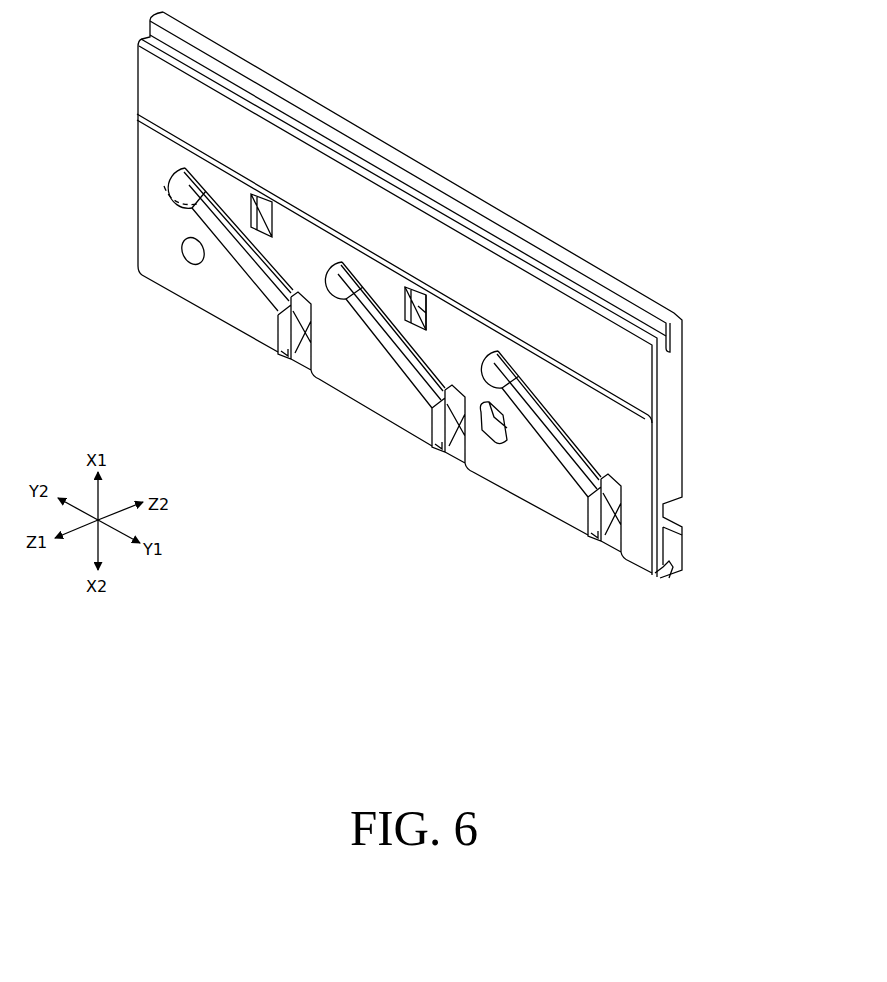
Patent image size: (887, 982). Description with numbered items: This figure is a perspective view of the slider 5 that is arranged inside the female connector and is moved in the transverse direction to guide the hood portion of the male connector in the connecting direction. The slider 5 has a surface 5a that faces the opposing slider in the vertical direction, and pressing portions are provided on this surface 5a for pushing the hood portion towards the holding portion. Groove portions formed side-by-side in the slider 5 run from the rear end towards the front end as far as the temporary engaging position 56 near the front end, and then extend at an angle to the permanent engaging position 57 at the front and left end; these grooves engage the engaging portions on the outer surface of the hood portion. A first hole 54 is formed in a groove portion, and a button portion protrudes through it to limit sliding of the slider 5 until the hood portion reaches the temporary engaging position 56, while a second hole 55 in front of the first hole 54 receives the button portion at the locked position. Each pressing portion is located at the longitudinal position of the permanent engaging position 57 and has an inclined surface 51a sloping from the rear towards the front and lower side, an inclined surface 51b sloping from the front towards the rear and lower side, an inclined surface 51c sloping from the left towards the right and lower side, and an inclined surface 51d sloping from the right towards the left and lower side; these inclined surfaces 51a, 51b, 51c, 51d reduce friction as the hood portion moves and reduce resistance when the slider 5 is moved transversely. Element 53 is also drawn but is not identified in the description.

The slider 5 is at (691, 276).
The surface 5a is at (637, 447).
The inclined surface 51a is at (410, 336).
The inclined surface 51b is at (422, 296).
The inclined surface 51c is at (405, 296).
The inclined surface 51d is at (431, 316).
The hook 53 is at (448, 460).
The first hole 54 is at (610, 548).
The second hole 55 is at (497, 442).
The temporary engaging position 56 is at (278, 306).
The permanent engaging position 57 is at (166, 184).